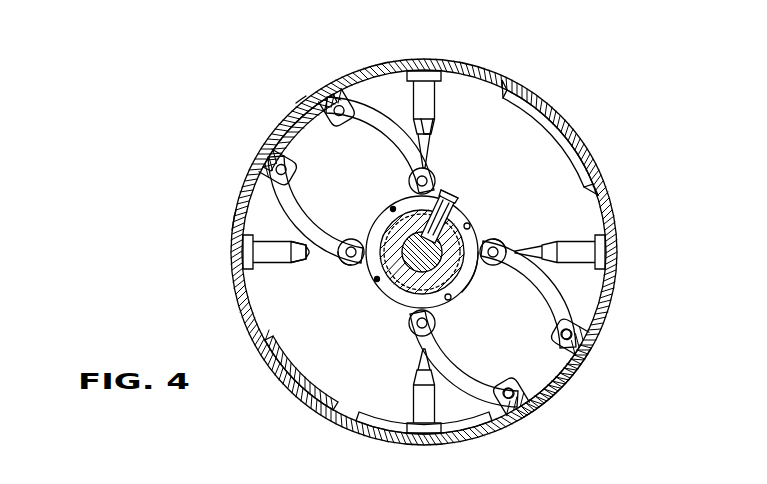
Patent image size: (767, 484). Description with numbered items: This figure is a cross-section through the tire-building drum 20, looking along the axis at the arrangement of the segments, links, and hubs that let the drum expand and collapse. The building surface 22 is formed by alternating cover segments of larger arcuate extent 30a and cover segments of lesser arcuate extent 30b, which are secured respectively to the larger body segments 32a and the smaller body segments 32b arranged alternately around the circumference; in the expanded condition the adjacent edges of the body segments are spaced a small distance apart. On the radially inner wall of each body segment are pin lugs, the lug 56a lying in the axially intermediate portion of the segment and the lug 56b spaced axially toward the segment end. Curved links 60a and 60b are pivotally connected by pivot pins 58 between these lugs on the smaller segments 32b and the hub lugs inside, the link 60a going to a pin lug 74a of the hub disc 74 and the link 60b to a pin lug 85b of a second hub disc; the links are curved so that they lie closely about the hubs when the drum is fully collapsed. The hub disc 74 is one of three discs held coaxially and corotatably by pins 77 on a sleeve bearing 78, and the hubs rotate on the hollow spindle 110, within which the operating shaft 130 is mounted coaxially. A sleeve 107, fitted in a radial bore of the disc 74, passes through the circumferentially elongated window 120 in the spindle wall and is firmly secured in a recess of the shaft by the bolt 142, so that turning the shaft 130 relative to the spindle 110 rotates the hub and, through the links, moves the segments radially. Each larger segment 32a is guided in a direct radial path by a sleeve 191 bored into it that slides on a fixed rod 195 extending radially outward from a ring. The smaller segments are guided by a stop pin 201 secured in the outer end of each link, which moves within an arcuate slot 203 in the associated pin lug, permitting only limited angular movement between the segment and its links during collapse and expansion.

The drum 20 is at (560, 110).
The building surface 22 is at (612, 298).
The cover segment of larger arcuate extent 30a is at (240, 212).
The cover segment of lesser arcuate extent 30b is at (300, 103).
The larger body segment 32a is at (236, 236).
The smaller body segment 32b is at (273, 146).
The pin lug 56a is at (556, 400).
The pin lug 56b is at (568, 368).
The pivot pin 58 is at (335, 100).
The link 60a is at (383, 128).
The link 60b is at (292, 195).
The hub disc 74 is at (455, 292).
The pin lug 74a is at (447, 198).
The pin 77 is at (392, 209).
The sleeve bearing 78 is at (385, 275).
The pin lug 85b is at (492, 243).
The sleeve 107 is at (457, 217).
The hollow spindle 110 is at (400, 285).
The window 120 is at (468, 270).
The operating shaft 130 is at (400, 240).
The bolt 142 is at (455, 190).
The sleeve 191 is at (265, 258).
The fixed rod 195 is at (305, 256).
The stop pin 201 is at (595, 320).
The arcuate slot 203 is at (537, 363).